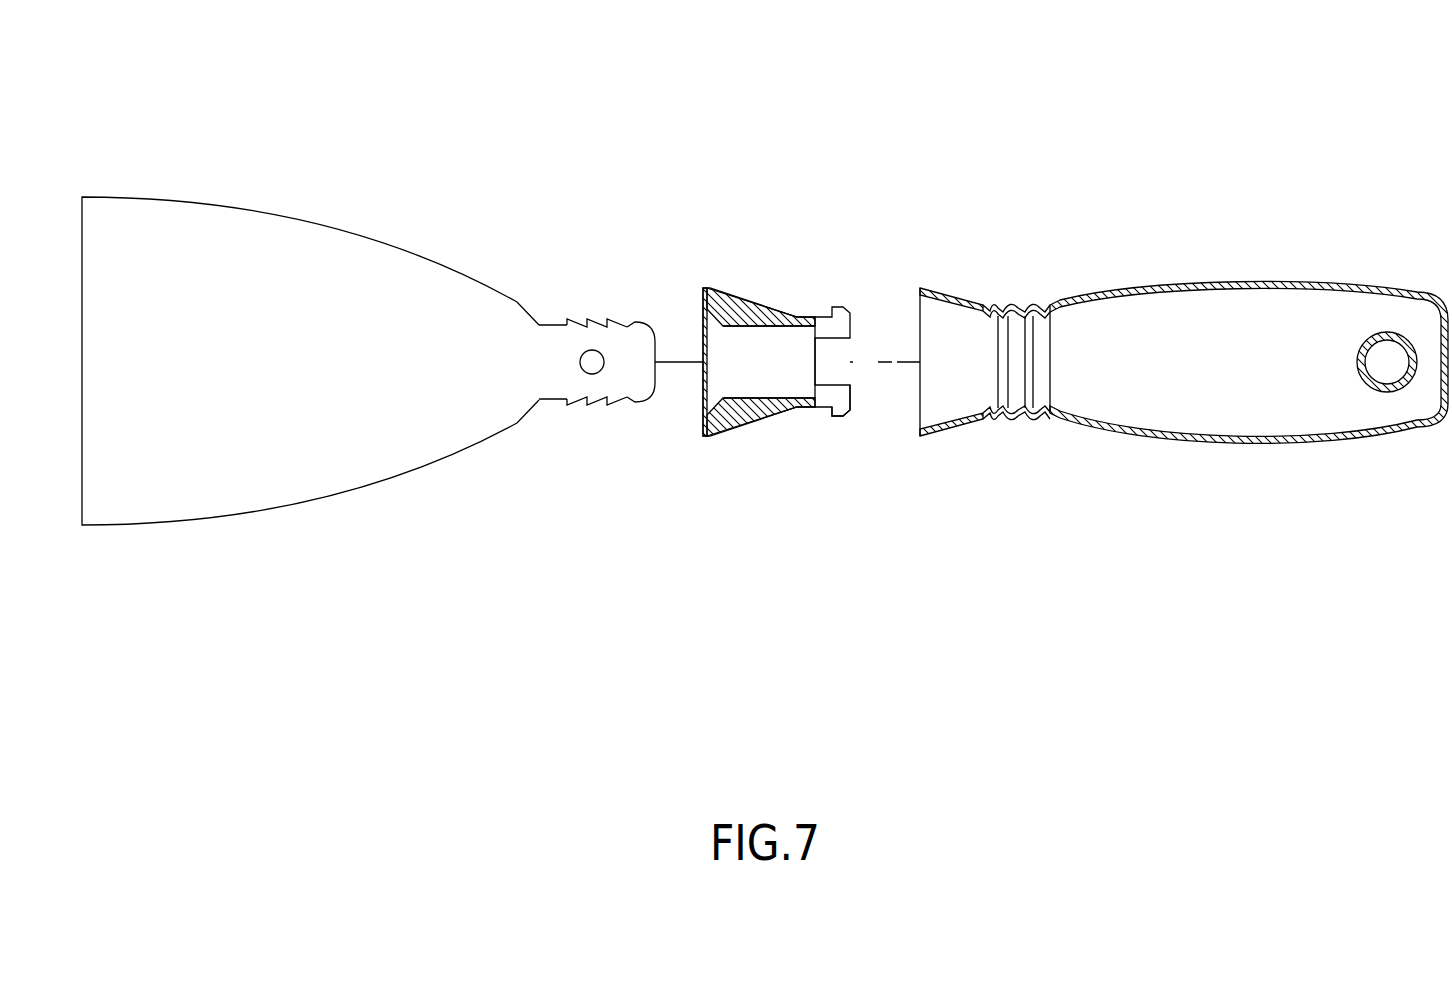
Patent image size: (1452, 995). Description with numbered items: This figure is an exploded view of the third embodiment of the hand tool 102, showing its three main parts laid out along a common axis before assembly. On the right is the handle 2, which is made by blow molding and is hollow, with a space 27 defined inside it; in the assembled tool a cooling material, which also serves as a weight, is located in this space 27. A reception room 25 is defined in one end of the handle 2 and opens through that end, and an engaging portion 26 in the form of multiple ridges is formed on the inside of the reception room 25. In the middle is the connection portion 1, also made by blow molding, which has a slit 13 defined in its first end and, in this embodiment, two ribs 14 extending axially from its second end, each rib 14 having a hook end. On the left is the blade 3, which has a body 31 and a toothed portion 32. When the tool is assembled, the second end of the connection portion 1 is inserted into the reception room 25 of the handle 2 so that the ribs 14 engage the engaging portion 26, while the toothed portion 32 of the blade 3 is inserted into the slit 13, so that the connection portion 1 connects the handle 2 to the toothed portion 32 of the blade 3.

The hand tool 102 is at (742, 146).
The connection portion 1 is at (775, 296).
The slit 13 is at (703, 408).
The rib 14 is at (838, 413).
The handle 2 is at (1183, 447).
The reception room 25 is at (927, 303).
The engaging portion 26 is at (1059, 416).
The space 27 is at (1392, 417).
The blade 3 is at (332, 218).
The body 31 is at (311, 482).
The toothed portion 32 is at (567, 318).